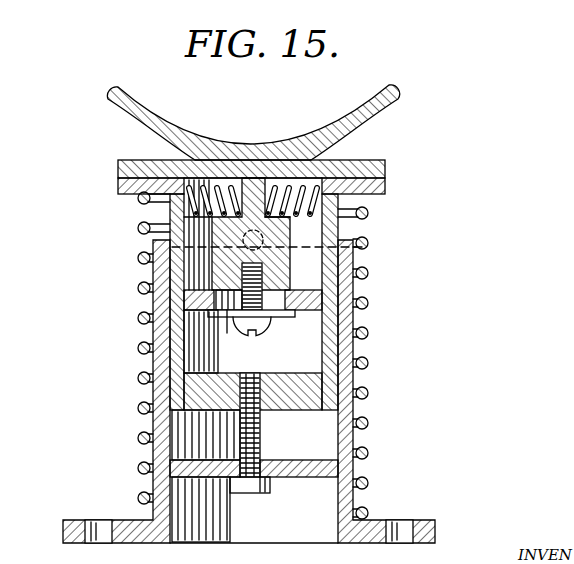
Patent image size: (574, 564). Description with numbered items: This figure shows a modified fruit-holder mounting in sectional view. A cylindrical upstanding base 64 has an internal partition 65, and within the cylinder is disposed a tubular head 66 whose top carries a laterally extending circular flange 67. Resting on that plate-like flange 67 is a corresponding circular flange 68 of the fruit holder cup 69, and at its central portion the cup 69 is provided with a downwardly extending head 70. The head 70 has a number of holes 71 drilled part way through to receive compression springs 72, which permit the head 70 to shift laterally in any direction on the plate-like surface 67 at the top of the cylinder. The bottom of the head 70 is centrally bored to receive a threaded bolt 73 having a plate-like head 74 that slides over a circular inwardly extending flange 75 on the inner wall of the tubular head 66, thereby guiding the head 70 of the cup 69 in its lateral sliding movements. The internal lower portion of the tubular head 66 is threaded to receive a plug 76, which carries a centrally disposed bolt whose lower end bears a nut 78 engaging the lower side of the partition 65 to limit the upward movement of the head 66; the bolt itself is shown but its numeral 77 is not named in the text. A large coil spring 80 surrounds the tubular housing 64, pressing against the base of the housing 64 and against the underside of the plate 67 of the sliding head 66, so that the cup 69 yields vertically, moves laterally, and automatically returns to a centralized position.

The cylindrical upstanding base 64 is at (153, 300).
The internal partition 65 is at (197, 477).
The tubular head 66 is at (323, 383).
The top laterally extending circular flange 67 is at (388, 181).
The circular flange 68 is at (382, 161).
The fruit holder cup 69 is at (350, 126).
The downwardly extending head 70 is at (222, 267).
The holes 71 is at (267, 193).
The compression springs 72 is at (170, 213).
The threaded bolt 73 is at (249, 332).
The plate-like head 74 is at (260, 325).
The circular inwardly extending flange 75 is at (197, 320).
The plug 76 is at (185, 427).
The threaded shaft 77 is at (261, 436).
The nut 78 is at (270, 496).
The large coil spring 80 is at (368, 453).